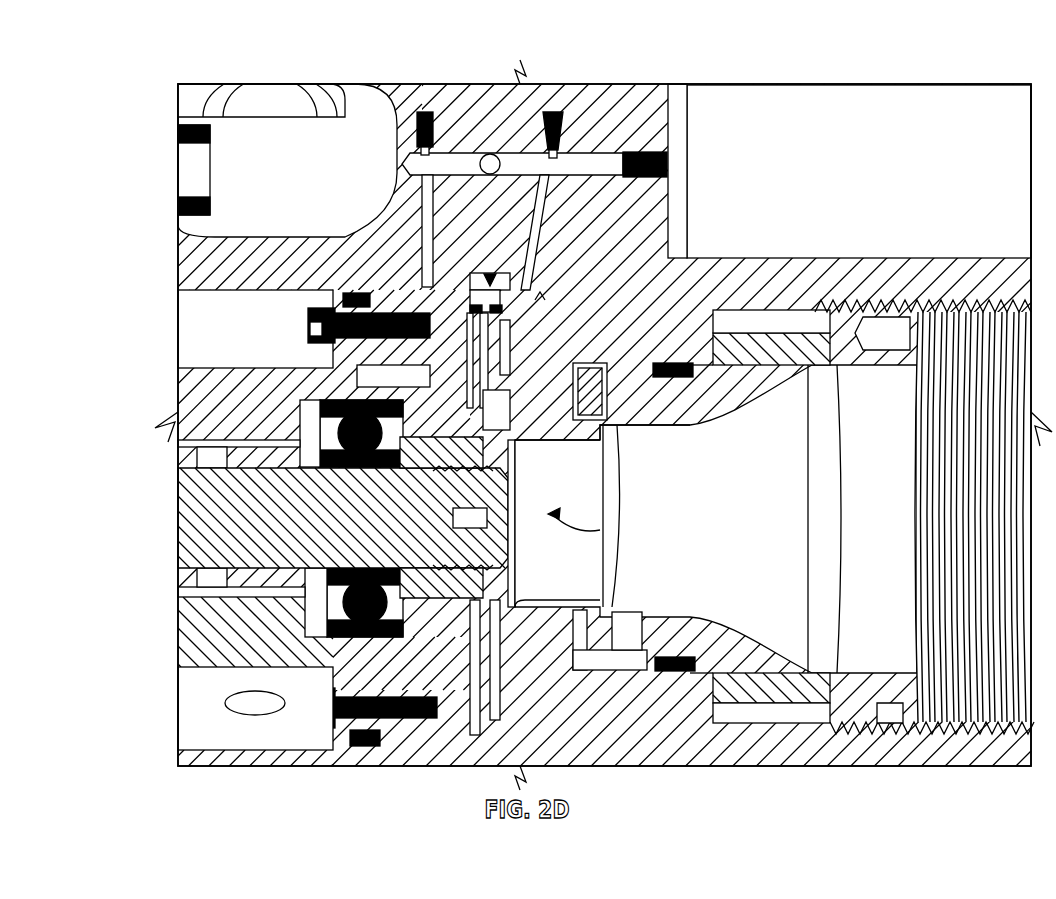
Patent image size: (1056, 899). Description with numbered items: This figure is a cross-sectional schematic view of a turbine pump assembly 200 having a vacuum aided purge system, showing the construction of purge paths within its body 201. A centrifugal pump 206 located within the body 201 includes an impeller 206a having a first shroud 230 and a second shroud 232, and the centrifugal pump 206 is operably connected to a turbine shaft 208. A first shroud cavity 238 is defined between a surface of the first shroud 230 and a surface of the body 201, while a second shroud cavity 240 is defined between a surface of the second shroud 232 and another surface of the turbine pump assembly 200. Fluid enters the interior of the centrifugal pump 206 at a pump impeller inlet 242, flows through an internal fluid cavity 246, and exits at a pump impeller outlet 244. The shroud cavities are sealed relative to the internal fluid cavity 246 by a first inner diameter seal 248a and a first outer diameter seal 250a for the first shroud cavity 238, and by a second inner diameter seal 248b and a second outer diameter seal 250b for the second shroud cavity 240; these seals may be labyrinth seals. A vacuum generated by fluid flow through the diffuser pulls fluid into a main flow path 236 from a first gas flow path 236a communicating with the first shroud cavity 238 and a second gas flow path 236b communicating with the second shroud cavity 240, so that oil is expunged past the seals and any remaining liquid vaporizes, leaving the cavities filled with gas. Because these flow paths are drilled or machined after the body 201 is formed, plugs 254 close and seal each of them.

The turbine pump assembly 200 is at (958, 76).
The body 201 is at (727, 268).
The centrifugal pump 206 is at (612, 578).
The impeller 206a is at (512, 688).
The turbine shaft 208 is at (188, 522).
The first shroud 230 is at (508, 345).
The second shroud 232 is at (528, 380).
The main flow path 236 is at (488, 155).
The first gas flow path 236a is at (545, 222).
The second gas flow path 236b is at (425, 237).
The first shroud cavity 238 is at (582, 392).
The second shroud cavity 240 is at (440, 388).
The pump impeller inlet 242 is at (605, 500).
The pump impeller outlet 244 is at (488, 272).
The internal fluid cavity 246 is at (606, 525).
The first inner diameter seal 248a is at (612, 428).
The second inner diameter seal 248b is at (516, 442).
The first outer diameter seal 250a is at (530, 300).
The second outer diameter seal 250b is at (471, 268).
The plugs 254 is at (414, 130).